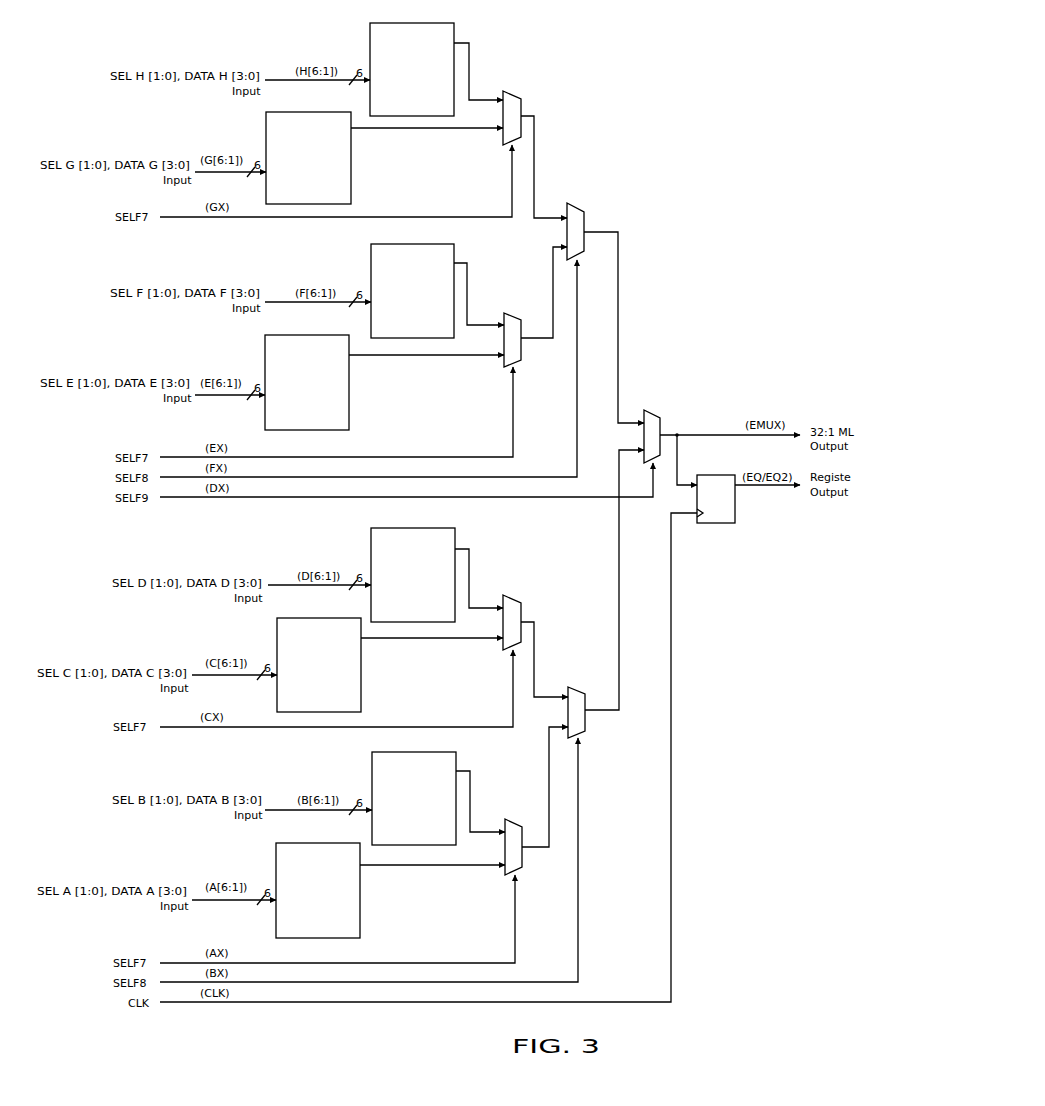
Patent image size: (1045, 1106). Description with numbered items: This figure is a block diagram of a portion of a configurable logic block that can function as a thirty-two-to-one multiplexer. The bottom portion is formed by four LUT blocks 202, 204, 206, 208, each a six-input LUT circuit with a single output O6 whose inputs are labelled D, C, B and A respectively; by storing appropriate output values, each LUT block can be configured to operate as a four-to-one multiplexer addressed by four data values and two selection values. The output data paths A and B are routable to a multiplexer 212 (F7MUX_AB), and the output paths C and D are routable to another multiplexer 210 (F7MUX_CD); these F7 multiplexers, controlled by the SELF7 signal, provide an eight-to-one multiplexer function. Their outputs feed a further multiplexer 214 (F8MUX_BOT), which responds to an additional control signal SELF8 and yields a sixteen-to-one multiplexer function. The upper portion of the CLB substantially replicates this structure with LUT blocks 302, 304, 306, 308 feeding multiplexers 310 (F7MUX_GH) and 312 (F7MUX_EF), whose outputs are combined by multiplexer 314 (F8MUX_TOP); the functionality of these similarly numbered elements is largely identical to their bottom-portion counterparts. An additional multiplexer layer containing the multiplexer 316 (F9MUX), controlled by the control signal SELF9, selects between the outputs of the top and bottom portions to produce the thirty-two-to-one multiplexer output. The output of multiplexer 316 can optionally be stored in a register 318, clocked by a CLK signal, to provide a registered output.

The LUT block 302 is at (440, 27).
The LUT block 304 is at (344, 173).
The LUT block 306 is at (449, 254).
The LUT block 308 is at (344, 407).
The multiplexer (F7MUX_GH) 310 is at (519, 107).
The multiplexer (F7MUX_EF) 312 is at (516, 361).
The multiplexer (F8MUX_TOP) 314 is at (580, 223).
The multiplexer (F9MUX) 316 is at (660, 418).
The register 318 is at (738, 503).
The LUT block 202 is at (449, 529).
The LUT block 204 is at (358, 682).
The LUT block 206 is at (428, 756).
The LUT block 208 is at (356, 907).
The multiplexer (F7MUX_CD) 210 is at (518, 609).
The multiplexer (F7MUX_AB) 212 is at (521, 856).
The multiplexer (F8MUX_BOT) 214 is at (584, 712).